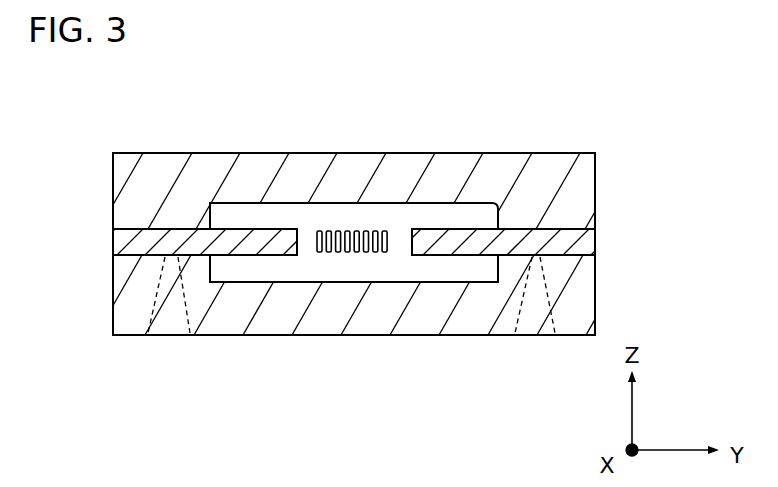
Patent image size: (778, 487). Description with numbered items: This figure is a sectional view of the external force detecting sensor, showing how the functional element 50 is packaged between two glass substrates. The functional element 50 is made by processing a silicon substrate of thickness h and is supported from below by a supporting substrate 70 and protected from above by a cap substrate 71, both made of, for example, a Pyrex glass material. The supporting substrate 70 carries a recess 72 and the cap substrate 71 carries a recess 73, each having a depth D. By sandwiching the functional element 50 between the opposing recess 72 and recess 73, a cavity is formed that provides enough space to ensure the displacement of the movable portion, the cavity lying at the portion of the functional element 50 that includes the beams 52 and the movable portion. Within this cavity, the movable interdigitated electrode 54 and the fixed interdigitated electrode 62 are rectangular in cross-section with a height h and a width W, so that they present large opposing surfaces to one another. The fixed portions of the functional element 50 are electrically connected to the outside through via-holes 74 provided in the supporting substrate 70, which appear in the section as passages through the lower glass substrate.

The functional element 50 is at (588, 241).
The beams 52 is at (232, 236).
The movable interdigitated electrode 54 is at (348, 232).
The fixed interdigitated electrode 62 is at (333, 255).
The supporting substrate 70 is at (385, 322).
The cap substrate 71 is at (555, 165).
The recess 72 is at (250, 338).
The recess 73 is at (248, 207).
The via-holes 74 is at (155, 297).